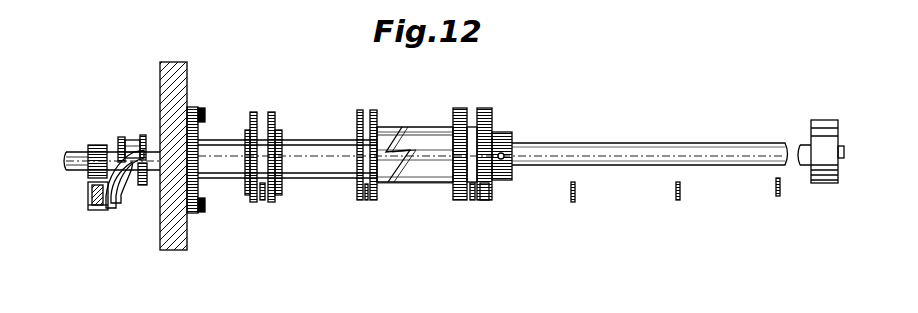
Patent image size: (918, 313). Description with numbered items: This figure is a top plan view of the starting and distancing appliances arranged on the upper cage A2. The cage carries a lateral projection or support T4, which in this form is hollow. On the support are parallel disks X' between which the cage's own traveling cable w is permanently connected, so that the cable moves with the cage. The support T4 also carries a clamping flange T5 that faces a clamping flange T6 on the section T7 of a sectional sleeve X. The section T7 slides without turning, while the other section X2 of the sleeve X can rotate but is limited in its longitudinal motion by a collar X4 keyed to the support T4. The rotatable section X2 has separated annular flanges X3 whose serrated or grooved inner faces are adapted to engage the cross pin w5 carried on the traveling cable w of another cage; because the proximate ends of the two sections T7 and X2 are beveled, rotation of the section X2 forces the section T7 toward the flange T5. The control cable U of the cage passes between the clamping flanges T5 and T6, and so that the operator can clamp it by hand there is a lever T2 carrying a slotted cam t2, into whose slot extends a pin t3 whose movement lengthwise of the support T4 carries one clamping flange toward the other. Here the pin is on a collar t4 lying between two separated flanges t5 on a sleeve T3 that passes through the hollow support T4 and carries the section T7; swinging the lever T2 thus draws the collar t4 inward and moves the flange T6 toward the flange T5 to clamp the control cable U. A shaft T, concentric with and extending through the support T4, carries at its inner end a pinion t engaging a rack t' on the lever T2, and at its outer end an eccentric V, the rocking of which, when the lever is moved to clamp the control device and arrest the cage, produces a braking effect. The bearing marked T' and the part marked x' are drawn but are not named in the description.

The upper cage A2 is at (172, 62).
The shaft T is at (414, 143).
The shaft bearing T' is at (64, 176).
The lever T2 is at (90, 196).
The sleeve T3 is at (198, 190).
The support T4 is at (216, 140).
The clamping flange T5 is at (358, 113).
The clamping flange T6 is at (376, 112).
The section of sectional sleeve T7 is at (390, 128).
The pinion t is at (89, 142).
The rack t' is at (85, 224).
The slotted cam t2 is at (116, 208).
The pin t3 is at (144, 186).
The collar t4 is at (142, 135).
The separated flanges t5 is at (120, 137).
The sectional sleeve X is at (415, 176).
The parallel disks X' is at (263, 144).
The rotatable section of sleeve X2 is at (395, 186).
The annular flanges X3 is at (460, 108).
The gear x' is at (501, 149).
The collar X4 is at (513, 180).
The control cable U is at (366, 200).
The eccentric V is at (821, 120).
The traveling cable w is at (263, 200).
The pin w5 is at (492, 200).